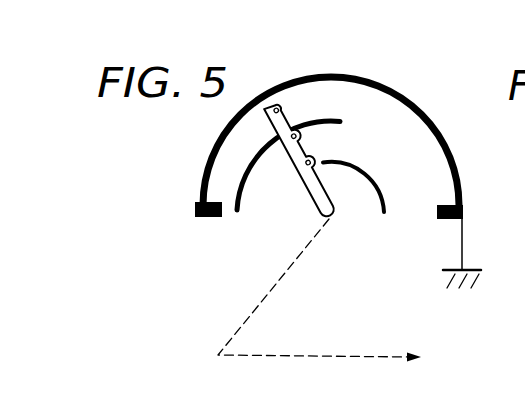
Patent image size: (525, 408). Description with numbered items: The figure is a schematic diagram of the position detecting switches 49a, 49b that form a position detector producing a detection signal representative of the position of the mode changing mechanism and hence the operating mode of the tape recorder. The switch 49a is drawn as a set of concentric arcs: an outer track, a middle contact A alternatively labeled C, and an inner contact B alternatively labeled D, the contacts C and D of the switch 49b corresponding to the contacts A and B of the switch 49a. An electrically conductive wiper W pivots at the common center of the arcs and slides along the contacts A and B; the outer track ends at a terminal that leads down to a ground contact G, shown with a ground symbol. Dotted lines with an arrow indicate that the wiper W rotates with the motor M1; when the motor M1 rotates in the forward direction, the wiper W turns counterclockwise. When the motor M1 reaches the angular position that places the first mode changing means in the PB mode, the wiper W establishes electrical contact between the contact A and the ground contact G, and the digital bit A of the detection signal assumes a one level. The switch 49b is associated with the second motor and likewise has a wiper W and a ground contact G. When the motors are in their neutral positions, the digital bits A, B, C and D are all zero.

The position detecting switch 49a is at (285, 147).
The position detecting switch 49b is at (216, 138).
The contact A is at (276, 214).
The contact C is at (237, 211).
The contact B is at (363, 235).
The contact D is at (383, 213).
The wiper W is at (303, 168).
The ground contact G is at (463, 212).
The motor M1 is at (371, 300).